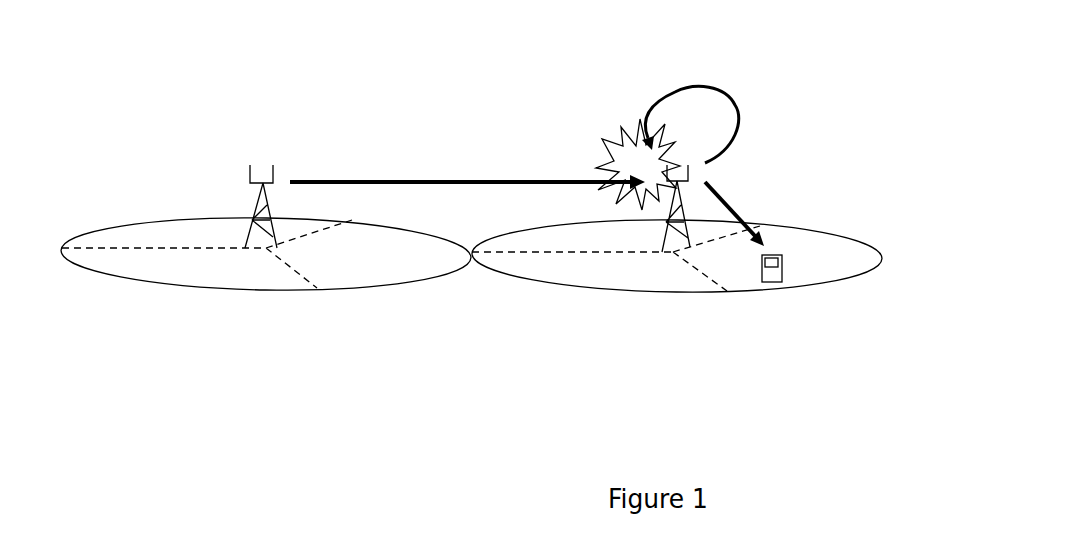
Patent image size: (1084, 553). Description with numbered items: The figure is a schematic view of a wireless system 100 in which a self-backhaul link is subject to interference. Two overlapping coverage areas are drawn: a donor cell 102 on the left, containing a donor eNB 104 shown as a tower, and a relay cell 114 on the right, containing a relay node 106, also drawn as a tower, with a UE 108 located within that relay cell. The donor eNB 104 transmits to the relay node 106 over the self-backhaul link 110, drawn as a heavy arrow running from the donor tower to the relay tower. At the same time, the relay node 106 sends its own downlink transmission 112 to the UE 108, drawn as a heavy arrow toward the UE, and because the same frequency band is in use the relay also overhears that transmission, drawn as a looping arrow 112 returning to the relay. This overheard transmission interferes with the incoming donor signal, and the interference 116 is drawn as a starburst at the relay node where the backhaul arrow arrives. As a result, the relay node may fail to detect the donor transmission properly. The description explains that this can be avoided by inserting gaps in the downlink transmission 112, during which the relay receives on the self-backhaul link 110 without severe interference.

The wireless communication system / first cell 100 is at (162, 219).
The first cell coverage area 102 is at (365, 262).
The donor eNB 104 is at (250, 233).
The relay node 106 is at (663, 231).
The UE 108 is at (782, 272).
The self-backhaul link 110 is at (450, 172).
The downlink transmission 112 is at (730, 98).
The second cell boundary 114 is at (828, 232).
The interference 116 is at (622, 140).